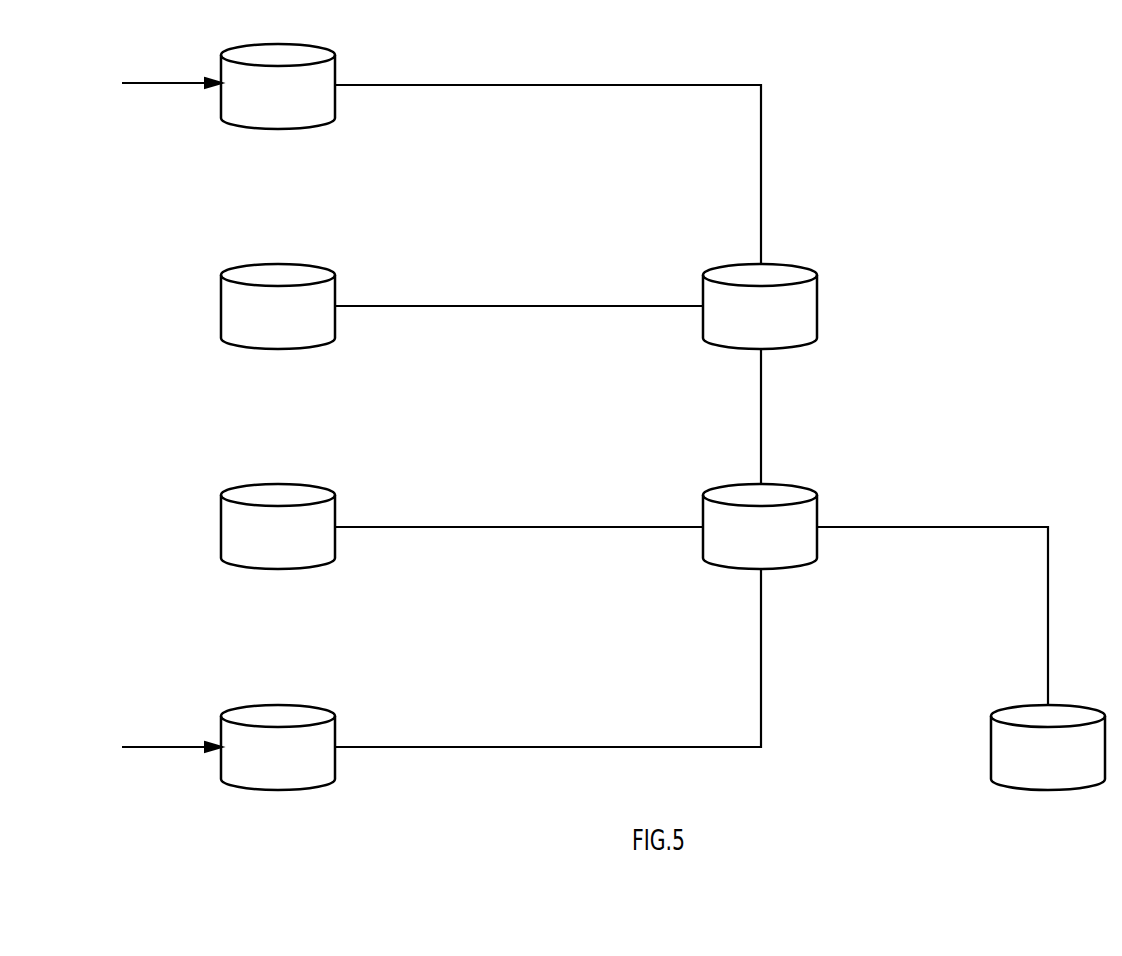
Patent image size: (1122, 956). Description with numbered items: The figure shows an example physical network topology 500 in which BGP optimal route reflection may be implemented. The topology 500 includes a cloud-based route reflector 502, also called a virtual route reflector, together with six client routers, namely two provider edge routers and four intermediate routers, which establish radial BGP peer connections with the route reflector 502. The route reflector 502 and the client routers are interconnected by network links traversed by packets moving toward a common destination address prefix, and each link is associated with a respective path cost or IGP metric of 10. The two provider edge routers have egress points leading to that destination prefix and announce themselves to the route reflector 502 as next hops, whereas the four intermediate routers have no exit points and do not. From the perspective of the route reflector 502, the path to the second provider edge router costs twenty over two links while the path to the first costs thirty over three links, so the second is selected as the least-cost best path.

The physical network topology 500 is at (1022, 250).
The cloud-based route reflector 502 is at (990, 748).
The path cost 10 is at (731, 398).